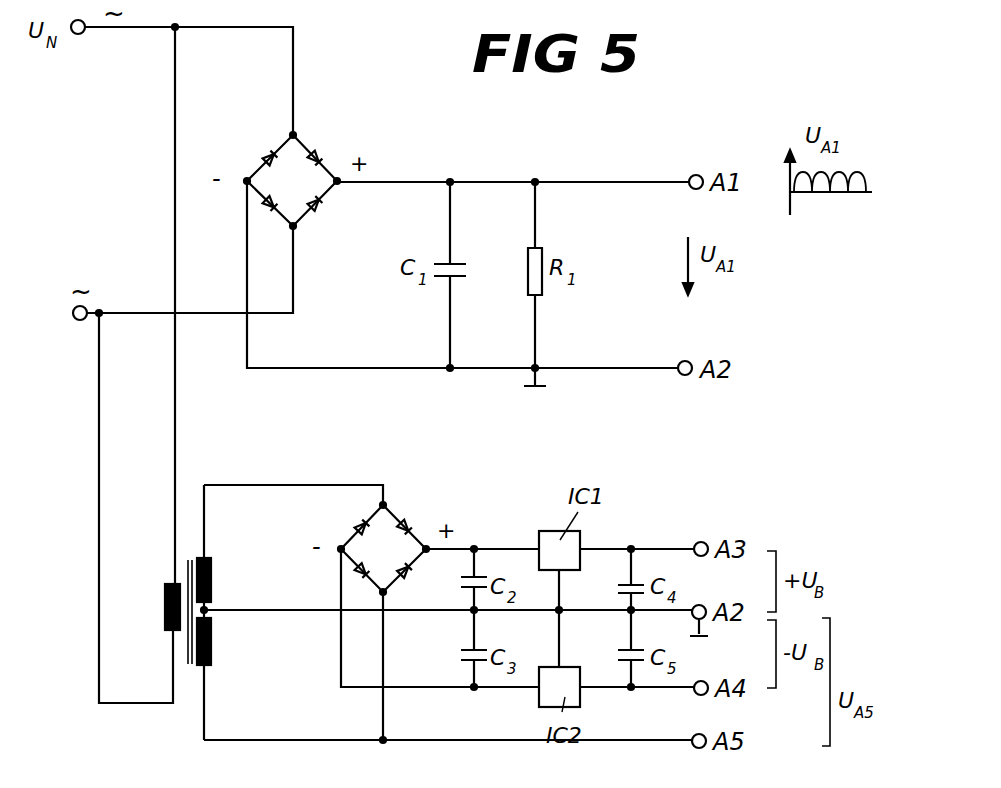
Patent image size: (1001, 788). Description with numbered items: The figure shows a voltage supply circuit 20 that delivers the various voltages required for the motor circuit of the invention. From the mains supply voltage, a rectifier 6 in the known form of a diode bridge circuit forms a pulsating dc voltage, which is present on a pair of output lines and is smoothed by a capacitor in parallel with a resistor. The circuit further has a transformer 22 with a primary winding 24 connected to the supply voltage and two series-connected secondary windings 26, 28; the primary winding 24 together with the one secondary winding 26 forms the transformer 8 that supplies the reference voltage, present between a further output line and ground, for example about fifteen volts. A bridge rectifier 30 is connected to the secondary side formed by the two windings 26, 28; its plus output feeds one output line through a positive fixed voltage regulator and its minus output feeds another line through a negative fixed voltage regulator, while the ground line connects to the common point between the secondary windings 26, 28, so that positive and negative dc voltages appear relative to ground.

The rectifier 6 is at (308, 186).
The transformer 8 is at (187, 612).
The voltage supply circuit 20 is at (721, 145).
The transformer 22 is at (146, 581).
The primary winding 24 is at (165, 607).
The secondary winding 26 is at (235, 643).
The secondary winding 28 is at (211, 582).
The bridge rectifier 30 is at (413, 547).